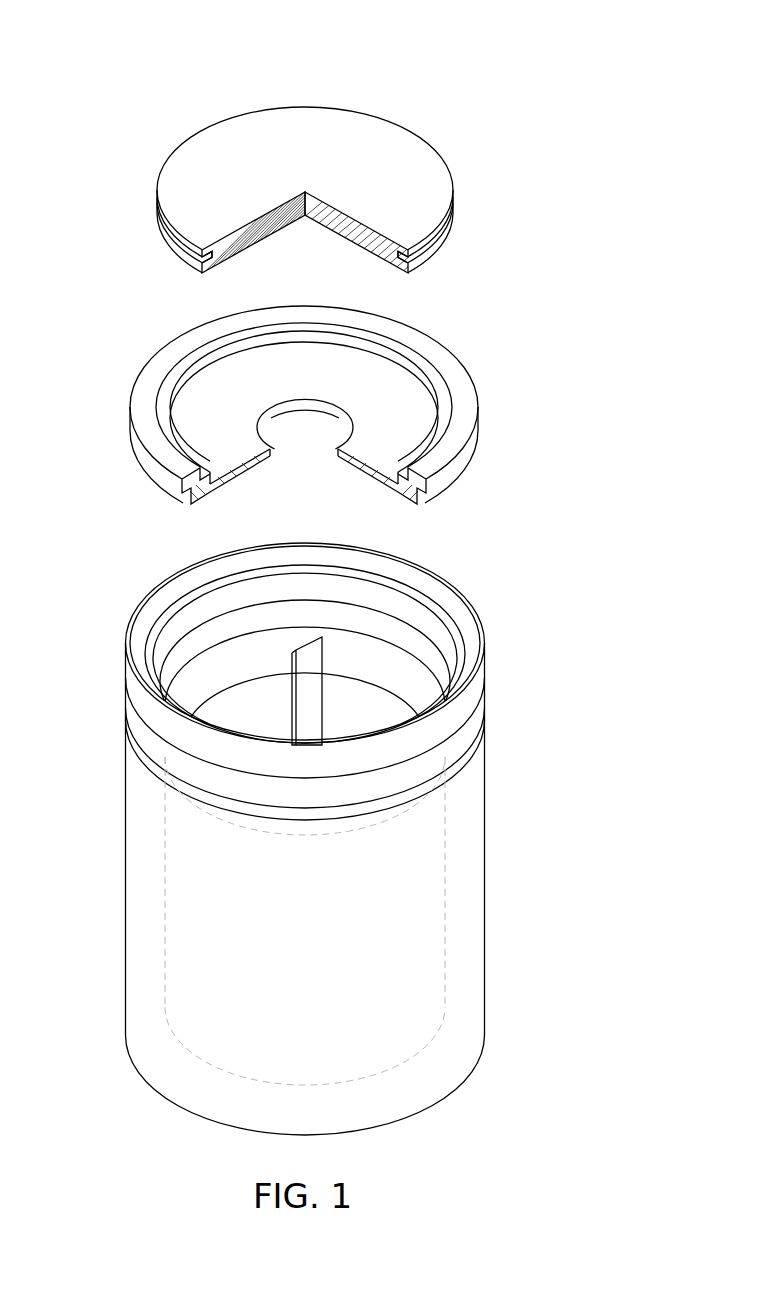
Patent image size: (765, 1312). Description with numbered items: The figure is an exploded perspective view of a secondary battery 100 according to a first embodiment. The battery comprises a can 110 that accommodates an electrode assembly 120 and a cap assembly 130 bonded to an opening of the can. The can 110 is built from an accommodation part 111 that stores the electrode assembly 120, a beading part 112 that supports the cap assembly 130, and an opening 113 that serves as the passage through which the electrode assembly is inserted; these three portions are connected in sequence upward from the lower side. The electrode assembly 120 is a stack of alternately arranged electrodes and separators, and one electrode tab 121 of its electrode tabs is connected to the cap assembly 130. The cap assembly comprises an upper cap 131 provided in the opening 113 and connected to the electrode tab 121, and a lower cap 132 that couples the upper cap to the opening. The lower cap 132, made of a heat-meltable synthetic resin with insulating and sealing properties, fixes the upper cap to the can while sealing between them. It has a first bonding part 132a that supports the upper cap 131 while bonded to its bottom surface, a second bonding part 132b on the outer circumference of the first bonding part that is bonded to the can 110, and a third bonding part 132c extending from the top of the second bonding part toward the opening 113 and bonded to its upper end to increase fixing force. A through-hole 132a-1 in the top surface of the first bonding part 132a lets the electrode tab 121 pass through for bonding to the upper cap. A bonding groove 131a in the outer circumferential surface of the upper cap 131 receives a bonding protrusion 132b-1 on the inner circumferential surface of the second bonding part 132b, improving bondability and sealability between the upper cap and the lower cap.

The secondary battery 100 is at (166, 76).
The can 110 is at (590, 648).
The accommodation part 111 is at (477, 805).
The beading part 112 is at (470, 730).
The opening 113 is at (470, 700).
The electrode assembly 120 is at (445, 922).
The electrode tab 121 is at (303, 693).
The cap assembly 130 is at (657, 182).
The upper cap 131 is at (428, 198).
The bonding groove 131a is at (417, 261).
The lower cap 132 is at (592, 348).
The first bonding part 132a is at (417, 488).
The through-hole 132a-1 is at (262, 417).
The second bonding part 132b is at (430, 481).
The bonding protrusion 132b-1 is at (200, 372).
The third bonding part 132c is at (472, 407).